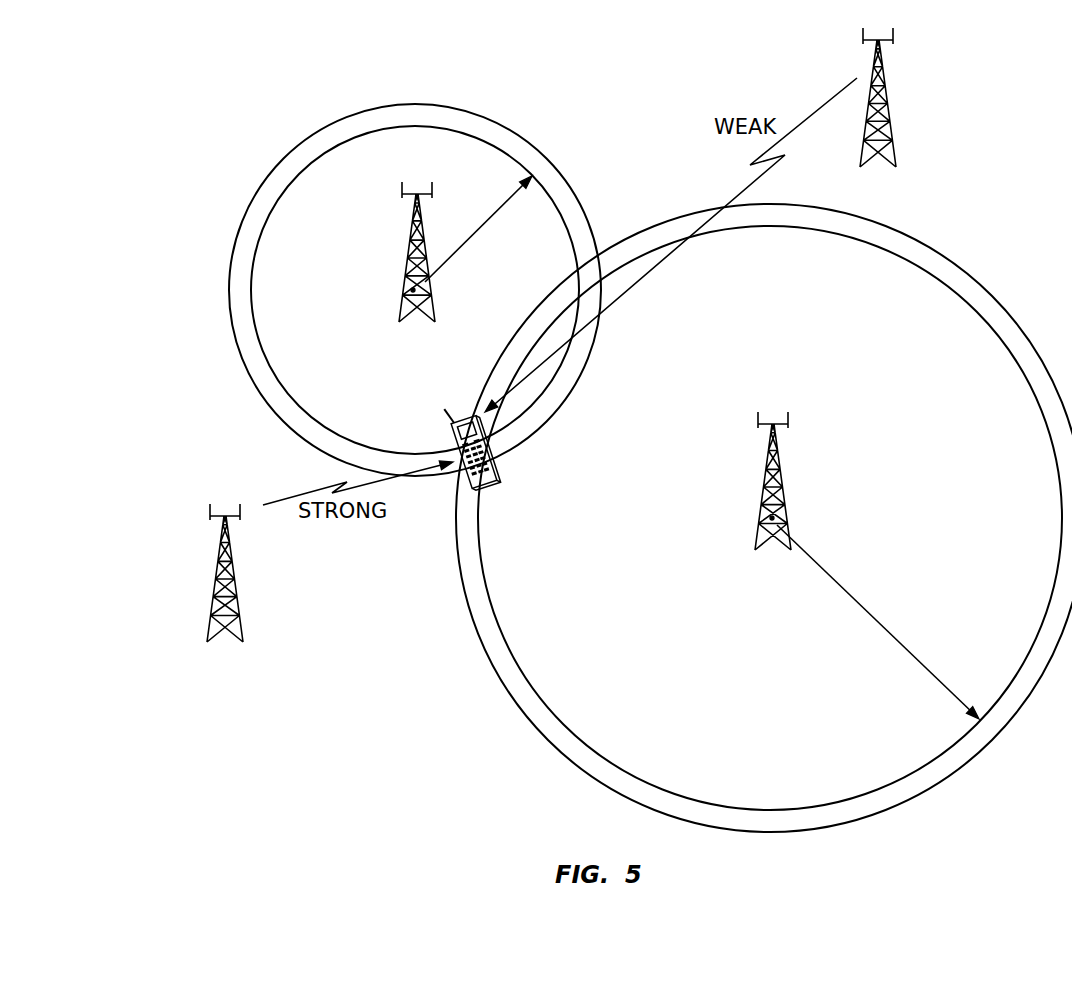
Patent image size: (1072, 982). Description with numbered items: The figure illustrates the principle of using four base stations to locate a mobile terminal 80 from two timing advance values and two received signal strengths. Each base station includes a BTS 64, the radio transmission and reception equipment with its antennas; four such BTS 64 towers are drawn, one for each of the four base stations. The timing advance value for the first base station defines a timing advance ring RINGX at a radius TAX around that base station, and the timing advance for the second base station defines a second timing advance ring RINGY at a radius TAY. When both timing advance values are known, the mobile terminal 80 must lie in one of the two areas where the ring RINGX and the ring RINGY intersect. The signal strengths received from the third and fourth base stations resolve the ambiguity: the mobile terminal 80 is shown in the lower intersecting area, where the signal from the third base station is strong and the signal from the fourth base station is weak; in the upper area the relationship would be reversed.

The Base Transceiver Station (BTS) 64 is at (412, 263).
The mobile terminal 80 is at (493, 476).
The timing-advance ring X of BSS A RINGX is at (353, 123).
The timing-advance ring Y of BSS B RINGY is at (758, 215).
The timing advance radius TA_X TAX is at (471, 234).
The timing advance radius TA_Y TAY is at (874, 617).